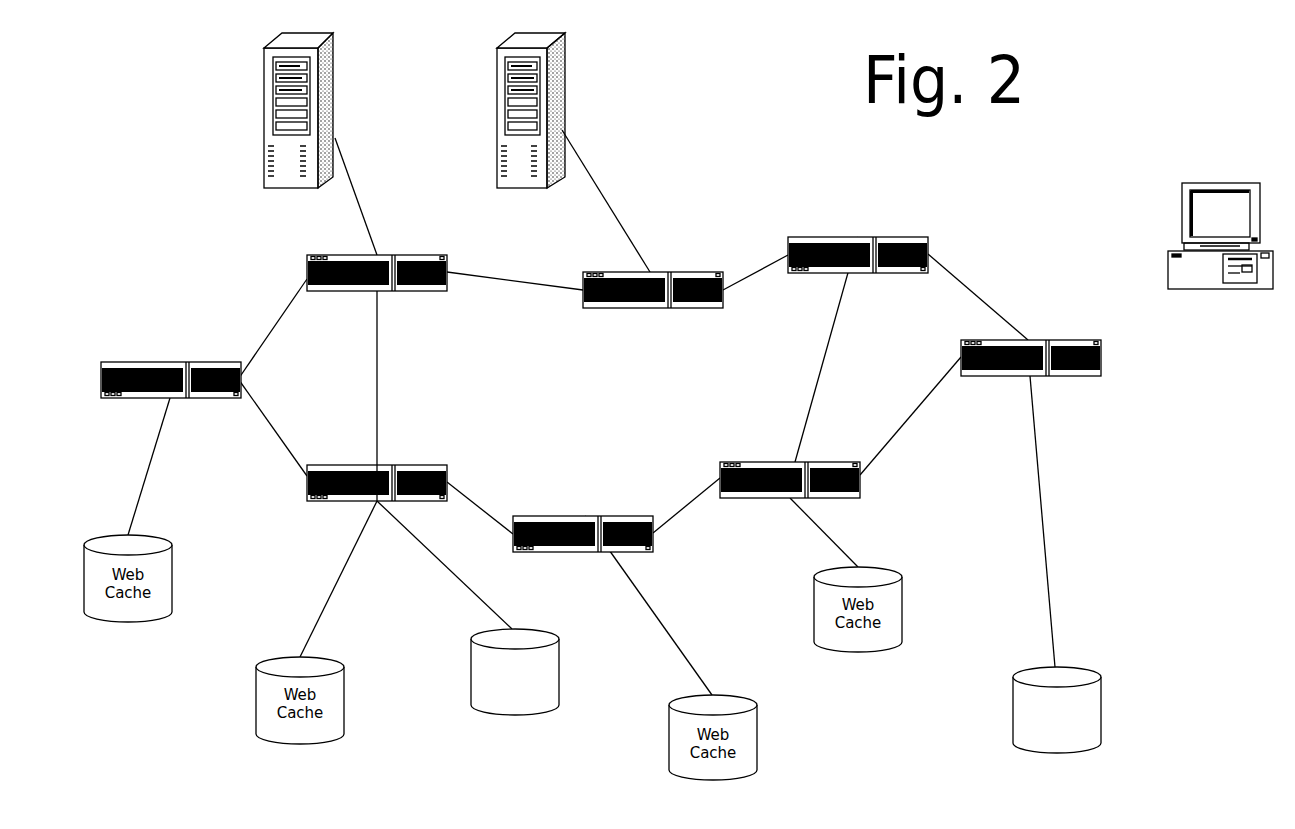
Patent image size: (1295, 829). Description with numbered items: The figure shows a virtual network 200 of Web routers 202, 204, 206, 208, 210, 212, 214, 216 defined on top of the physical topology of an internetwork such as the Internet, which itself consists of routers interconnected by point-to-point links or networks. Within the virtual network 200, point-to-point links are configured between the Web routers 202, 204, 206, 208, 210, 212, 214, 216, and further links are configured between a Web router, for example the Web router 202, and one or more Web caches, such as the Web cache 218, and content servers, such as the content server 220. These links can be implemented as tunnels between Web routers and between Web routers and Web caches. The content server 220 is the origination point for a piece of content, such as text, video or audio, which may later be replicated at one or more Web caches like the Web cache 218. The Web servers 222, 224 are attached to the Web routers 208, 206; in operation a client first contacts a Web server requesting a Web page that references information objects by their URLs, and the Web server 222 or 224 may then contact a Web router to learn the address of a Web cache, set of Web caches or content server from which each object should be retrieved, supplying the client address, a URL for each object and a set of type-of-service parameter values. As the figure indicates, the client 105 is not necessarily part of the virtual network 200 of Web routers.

The virtual network 200 is at (238, 266).
The client 105 is at (1220, 244).
The Web router 202 is at (1062, 367).
The Web router 204 is at (860, 245).
The Web router 206 is at (653, 300).
The Web router 208 is at (378, 284).
The Web router 210 is at (171, 369).
The Web router 212 is at (409, 472).
The Web router 214 is at (583, 523).
The Web router 216 is at (832, 489).
The Web cache 218 is at (1057, 710).
The content server 220 is at (515, 672).
The Web server 222 is at (291, 121).
The Web server 224 is at (523, 121).